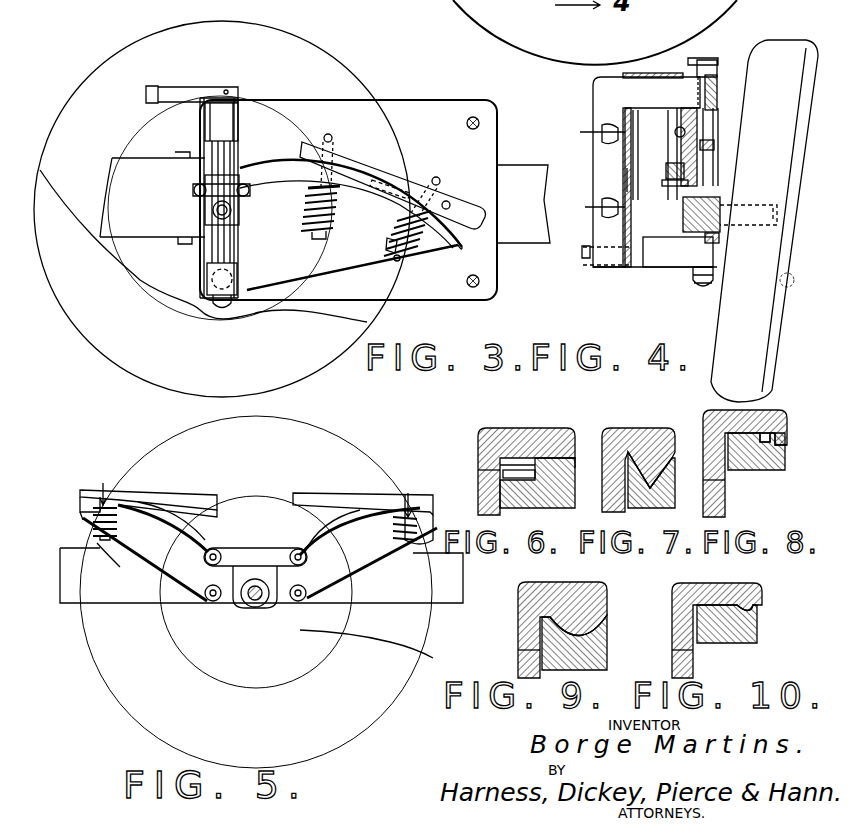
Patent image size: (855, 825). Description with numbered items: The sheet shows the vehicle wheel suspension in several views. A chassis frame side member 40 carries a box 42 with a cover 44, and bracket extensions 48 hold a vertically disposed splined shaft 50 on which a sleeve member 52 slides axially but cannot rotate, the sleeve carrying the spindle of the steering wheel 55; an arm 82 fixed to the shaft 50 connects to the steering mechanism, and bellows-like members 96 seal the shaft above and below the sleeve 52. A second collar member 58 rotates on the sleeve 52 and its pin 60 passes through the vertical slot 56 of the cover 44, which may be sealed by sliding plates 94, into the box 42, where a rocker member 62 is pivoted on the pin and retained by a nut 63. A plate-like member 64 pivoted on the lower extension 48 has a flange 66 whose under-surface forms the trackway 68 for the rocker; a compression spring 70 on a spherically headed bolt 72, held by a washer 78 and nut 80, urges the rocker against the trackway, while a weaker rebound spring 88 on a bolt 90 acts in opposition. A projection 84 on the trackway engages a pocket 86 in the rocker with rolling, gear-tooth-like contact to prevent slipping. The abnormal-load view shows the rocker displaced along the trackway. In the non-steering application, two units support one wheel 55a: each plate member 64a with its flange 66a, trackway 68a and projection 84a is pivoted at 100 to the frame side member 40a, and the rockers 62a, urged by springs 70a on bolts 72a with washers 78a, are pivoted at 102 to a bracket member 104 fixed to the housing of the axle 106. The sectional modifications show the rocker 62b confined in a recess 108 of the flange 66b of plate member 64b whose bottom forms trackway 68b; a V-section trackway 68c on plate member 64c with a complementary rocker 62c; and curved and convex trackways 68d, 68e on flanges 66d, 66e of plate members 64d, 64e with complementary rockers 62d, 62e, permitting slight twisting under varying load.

In FIG. 3, the chassis frame side member 40 is at (200, 152).
In FIG. 4, the chassis frame side member 40 is at (595, 148).
In FIG. 5, the frame side member 40a is at (80, 552).
In FIG. 3, the box 42 is at (274, 100).
In FIG. 4, the box 42 is at (685, 74).
In FIG. 4, the cover 44 is at (680, 150).
In FIG. 3, the extension 48 is at (210, 112).
In FIG. 4, the extension 48 is at (715, 88).
In FIG. 3, the splined shaft 50 is at (232, 240).
In FIG. 4, the splined shaft 50 is at (712, 128).
In FIG. 3, the sleeve member 52 is at (208, 214).
In FIG. 4, the sleeve member 52 is at (734, 214).
In FIG. 3, the wheel 55 is at (130, 383).
In FIG. 4, the wheel 55 is at (788, 40).
In FIG. 5, the wheel 55a is at (110, 716).
In FIG. 4, the vertical slot 56 is at (676, 132).
In FIG. 3, the second collar member 58 is at (208, 190).
In FIG. 4, the second collar member 58 is at (722, 200).
In FIG. 4, the extension or pin 60 is at (678, 252).
In FIG. 3, the rocker member 62 is at (447, 255).
In FIG. 4, the rocker member 62 is at (666, 172).
In FIG. 6, the rocker member 62 is at (522, 508).
In FIG. 5, the rocker 62a is at (150, 520).
In FIG. 8, the rocker member 62b is at (762, 470).
In FIG. 7, the rocker 62c is at (645, 508).
In FIG. 9, the rocker 62d is at (600, 663).
In FIG. 10, the rocker 62e is at (730, 643).
In FIG. 4, the nut 63 is at (640, 228).
In FIG. 3, the plate-like member 64 is at (322, 238).
In FIG. 4, the plate-like member 64 is at (627, 182).
In FIG. 6, the plate-like member 64 is at (478, 476).
In FIG. 5, the plate member 64a is at (130, 565).
In FIG. 8, the plate member 64b is at (725, 500).
In FIG. 7, the plate member 64c is at (605, 508).
In FIG. 9, the plate member 64d is at (518, 652).
In FIG. 10, the plate member 64e is at (672, 650).
In FIG. 3, the flange or extension 66 is at (352, 158).
In FIG. 6, the flange or extension 66 is at (552, 432).
In FIG. 5, the flange 66a is at (192, 490).
In FIG. 8, the flange 66b is at (710, 412).
In FIG. 9, the flange 66d is at (578, 584).
In FIG. 10, the flange 66e is at (750, 584).
In FIG. 3, the trackway 68 is at (449, 200).
In FIG. 6, the trackway 68 is at (572, 455).
In FIG. 5, the trackway 68a is at (210, 500).
In FIG. 8, the trackway 68b is at (772, 432).
In FIG. 7, the trackway 68c is at (646, 468).
In FIG. 9, the trackway 68d is at (598, 630).
In FIG. 10, the trackway 68e is at (754, 610).
In FIG. 3, the compression spring 70 is at (392, 228).
In FIG. 5, the compression spring 70a is at (90, 512).
In FIG. 3, the spherically headed bolt 72 is at (438, 176).
In FIG. 5, the bolt 72a is at (100, 488).
In FIG. 3, the washer 78 is at (396, 262).
In FIG. 5, the washer 78a is at (168, 580).
In FIG. 3, the nut 80 is at (396, 255).
In FIG. 3, the arm 82 is at (174, 87).
In FIG. 4, the arm 82 is at (710, 62).
In FIG. 3, the projection 84 is at (405, 172).
In FIG. 6, the projection 84 is at (510, 466).
In FIG. 5, the projection 84a is at (160, 502).
In FIG. 6, the pocket 86 is at (503, 476).
In FIG. 3, the rebound spring 88 is at (310, 208).
In FIG. 3, the bolt 90 is at (335, 120).
In FIG. 4, the sliding plates 94 is at (664, 186).
In FIG. 4, the bellows-like members 96 is at (716, 146).
In FIG. 5, the pivotal connection 100 is at (210, 603).
In FIG. 5, the pivotal connection 102 is at (216, 548).
In FIG. 5, the bracket member 104 is at (254, 556).
In FIG. 5, the axle 106 is at (252, 608).
In FIG. 8, the recess 108 is at (771, 438).